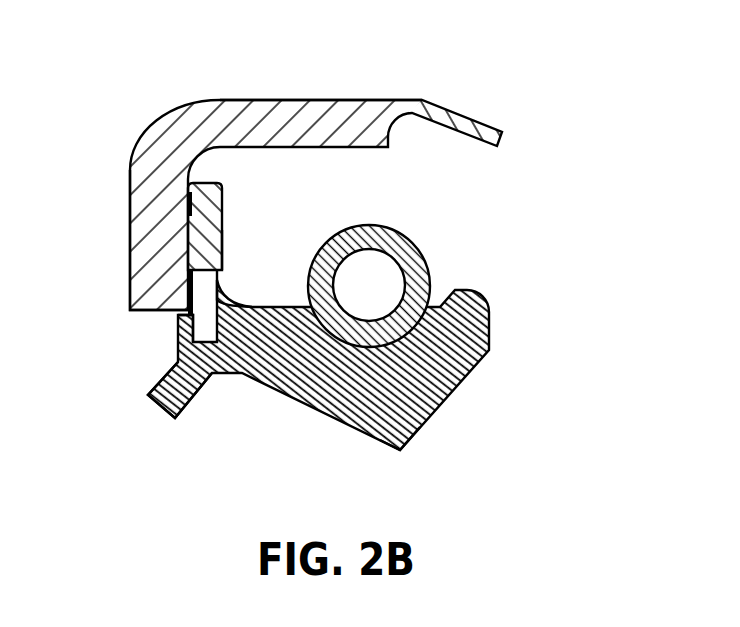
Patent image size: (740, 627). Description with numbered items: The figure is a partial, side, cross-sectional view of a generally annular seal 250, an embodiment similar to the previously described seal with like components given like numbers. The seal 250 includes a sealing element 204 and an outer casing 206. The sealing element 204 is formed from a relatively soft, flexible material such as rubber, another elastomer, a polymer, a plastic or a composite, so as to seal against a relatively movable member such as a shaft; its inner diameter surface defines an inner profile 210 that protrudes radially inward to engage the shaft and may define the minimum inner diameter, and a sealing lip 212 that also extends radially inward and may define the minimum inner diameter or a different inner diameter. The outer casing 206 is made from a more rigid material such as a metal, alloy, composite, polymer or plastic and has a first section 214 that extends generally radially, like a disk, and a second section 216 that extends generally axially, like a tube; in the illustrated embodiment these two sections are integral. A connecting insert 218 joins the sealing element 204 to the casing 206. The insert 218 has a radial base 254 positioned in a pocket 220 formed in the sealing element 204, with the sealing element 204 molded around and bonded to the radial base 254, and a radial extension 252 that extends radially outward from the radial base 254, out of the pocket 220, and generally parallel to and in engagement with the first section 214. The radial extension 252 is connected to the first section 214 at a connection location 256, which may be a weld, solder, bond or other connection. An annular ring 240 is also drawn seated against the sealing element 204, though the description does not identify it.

The seal 250 is at (142, 70).
The outer casing 206 is at (306, 104).
The second section 216 is at (232, 105).
The first section 214 is at (155, 252).
The sealing element 204 is at (470, 376).
The inner profile 210 is at (402, 450).
The sealing lip 212 is at (160, 403).
The pocket 220 is at (178, 320).
The O-ring 240 is at (408, 237).
The connecting insert 218 is at (224, 201).
The radial extension 252 is at (224, 240).
The radial base 254 is at (242, 306).
The connection location 256 is at (188, 204).